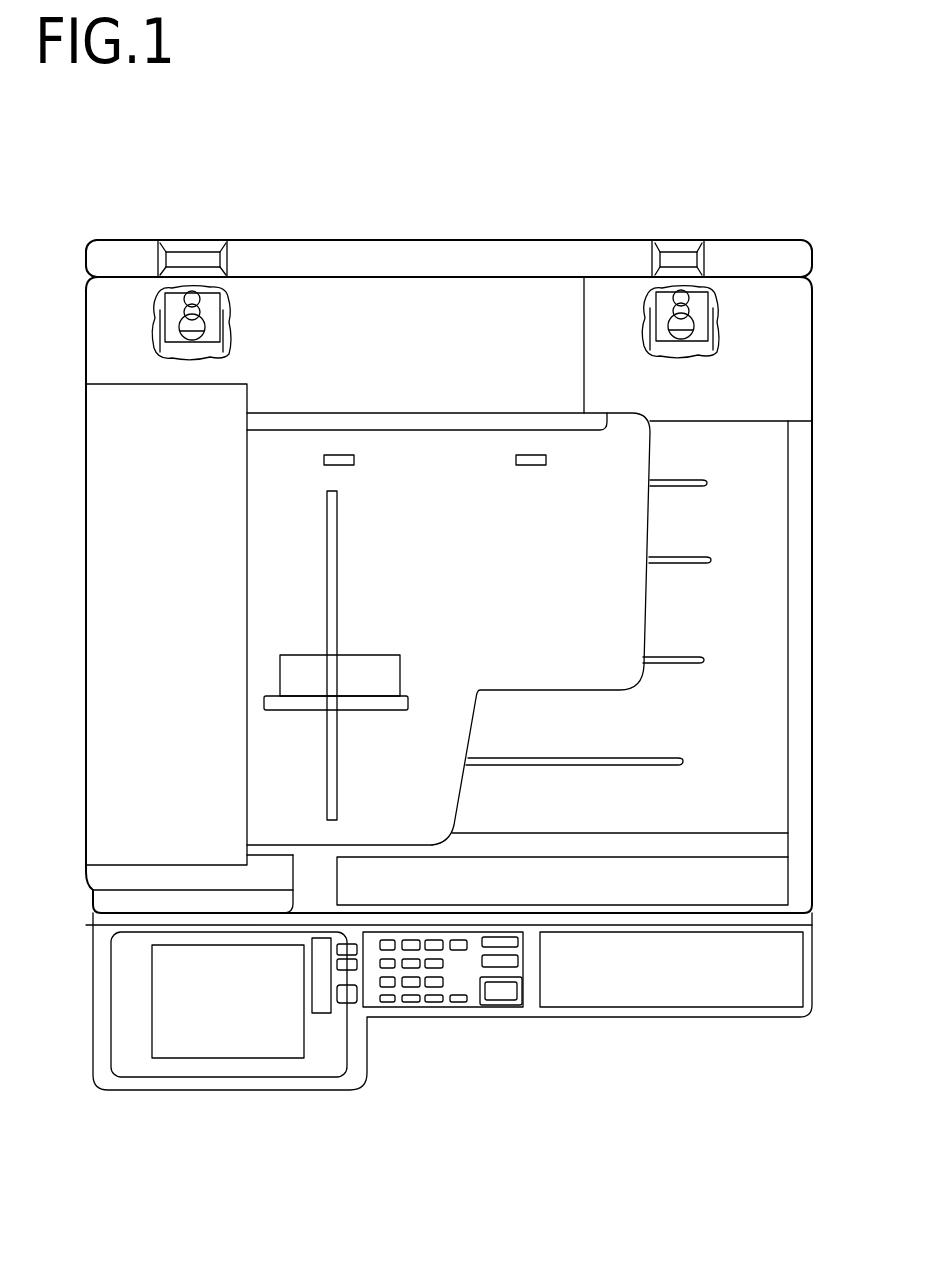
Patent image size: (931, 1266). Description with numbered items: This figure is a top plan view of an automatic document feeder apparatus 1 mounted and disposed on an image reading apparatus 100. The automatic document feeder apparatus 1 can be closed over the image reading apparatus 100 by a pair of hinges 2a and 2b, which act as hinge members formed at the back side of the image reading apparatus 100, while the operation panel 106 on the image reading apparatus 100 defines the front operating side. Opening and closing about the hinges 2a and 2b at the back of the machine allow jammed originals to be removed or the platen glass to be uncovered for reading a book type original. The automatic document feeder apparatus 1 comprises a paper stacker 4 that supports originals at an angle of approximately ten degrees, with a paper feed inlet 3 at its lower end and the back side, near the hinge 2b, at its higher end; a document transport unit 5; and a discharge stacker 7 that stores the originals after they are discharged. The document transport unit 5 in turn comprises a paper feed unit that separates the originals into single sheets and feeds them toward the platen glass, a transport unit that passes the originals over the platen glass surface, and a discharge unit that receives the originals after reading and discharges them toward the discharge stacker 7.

The automatic document feeder apparatus 1 is at (425, 312).
The hinge 2a is at (194, 258).
The hinge 2b is at (680, 262).
The paper feed inlet 3 is at (249, 551).
The paper stacker 4 is at (636, 537).
The document transport unit 5 is at (100, 540).
The discharge stacker 7 is at (775, 630).
The image reading apparatus 100 is at (658, 1018).
The operation panel 106 is at (459, 985).